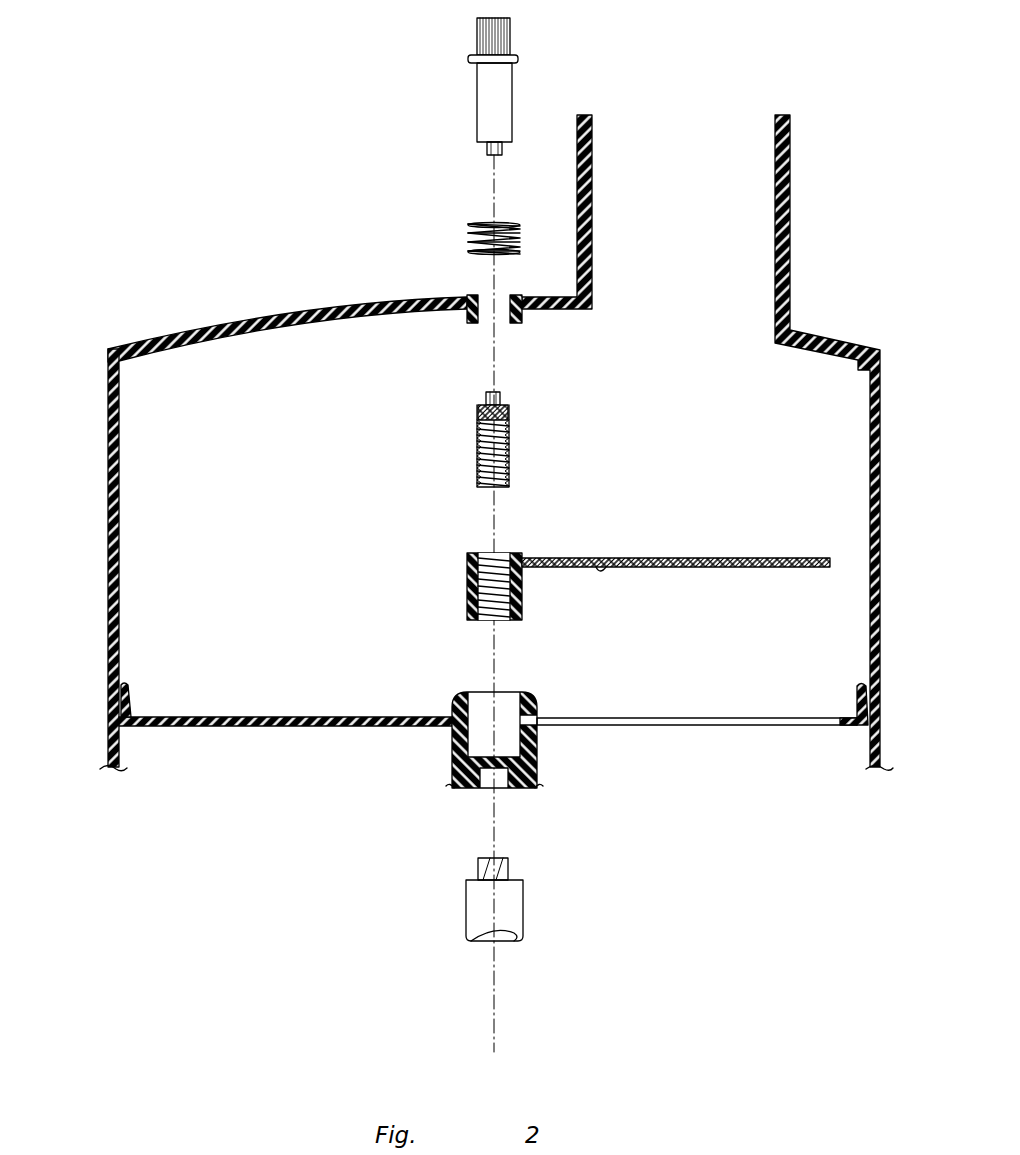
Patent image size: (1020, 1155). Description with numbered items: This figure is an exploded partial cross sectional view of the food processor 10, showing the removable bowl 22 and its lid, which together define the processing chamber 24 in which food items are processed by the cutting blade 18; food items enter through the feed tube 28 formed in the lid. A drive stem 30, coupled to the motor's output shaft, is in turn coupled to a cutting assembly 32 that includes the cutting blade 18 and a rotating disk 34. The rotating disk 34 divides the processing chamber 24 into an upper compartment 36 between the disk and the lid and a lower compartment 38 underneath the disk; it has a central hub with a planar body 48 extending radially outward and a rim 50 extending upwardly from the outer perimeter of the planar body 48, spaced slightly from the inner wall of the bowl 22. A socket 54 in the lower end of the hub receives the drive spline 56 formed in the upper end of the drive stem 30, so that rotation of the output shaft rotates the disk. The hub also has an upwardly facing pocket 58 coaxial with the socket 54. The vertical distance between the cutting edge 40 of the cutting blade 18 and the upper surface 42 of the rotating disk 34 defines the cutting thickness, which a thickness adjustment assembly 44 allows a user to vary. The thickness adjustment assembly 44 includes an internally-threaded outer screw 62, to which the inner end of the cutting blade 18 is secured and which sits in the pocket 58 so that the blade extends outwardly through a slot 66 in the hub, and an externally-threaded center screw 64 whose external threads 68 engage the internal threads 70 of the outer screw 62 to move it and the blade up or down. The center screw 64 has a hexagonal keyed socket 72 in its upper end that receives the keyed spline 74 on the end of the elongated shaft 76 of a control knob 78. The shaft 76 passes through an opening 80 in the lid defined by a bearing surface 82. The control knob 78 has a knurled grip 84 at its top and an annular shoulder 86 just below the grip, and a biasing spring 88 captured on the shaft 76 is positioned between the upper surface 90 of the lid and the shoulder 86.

The food processor 10 is at (758, 80).
The cutting blade 18 is at (676, 526).
The removable bowl 22 is at (107, 524).
The processing chamber 24 is at (716, 445).
The feed tube 28 is at (284, 303).
The drive stem 30 is at (501, 898).
The cutting assembly 32 is at (750, 534).
The rotating disk 34 is at (285, 696).
The upper compartment 36 is at (300, 532).
The lower compartment 38 is at (278, 812).
The cutting edge 40 is at (600, 560).
The upper surface 42 is at (616, 717).
The thickness adjustment assembly 44 is at (537, 474).
The planar body 48 is at (262, 716).
The rim 50 is at (130, 690).
The socket 54 is at (505, 786).
The drive spline 56 is at (480, 866).
The pocket 58 is at (506, 743).
The outer screw 62 is at (474, 565).
The center screw 64 is at (497, 421).
The slot 66 is at (532, 745).
The external threads 68 is at (512, 430).
The internal threads 70 is at (496, 553).
The keyed socket 72 is at (499, 393).
The keyed spline 74 is at (486, 149).
The elongated shaft 76 is at (503, 97).
The control knob 78 is at (513, 90).
The opening 80 is at (502, 309).
The bearing surface 82 is at (520, 320).
The knurled grip 84 is at (511, 40).
The annular shoulder 86 is at (470, 60).
The biasing spring 88 is at (468, 243).
The upper surface 90 is at (470, 296).